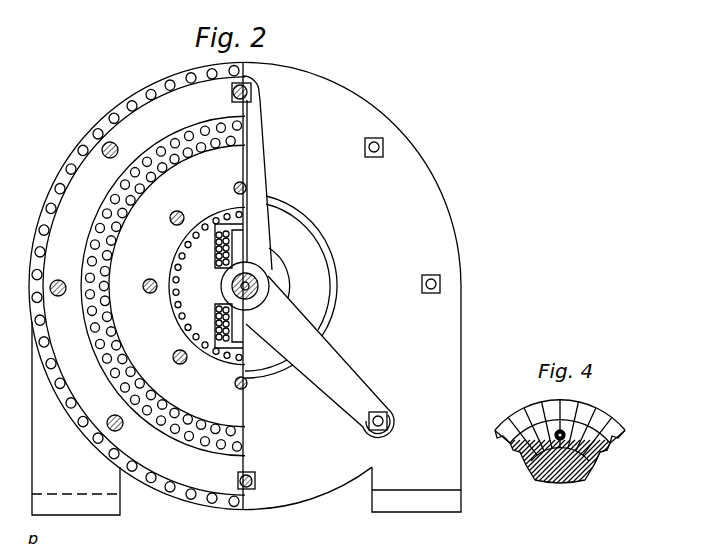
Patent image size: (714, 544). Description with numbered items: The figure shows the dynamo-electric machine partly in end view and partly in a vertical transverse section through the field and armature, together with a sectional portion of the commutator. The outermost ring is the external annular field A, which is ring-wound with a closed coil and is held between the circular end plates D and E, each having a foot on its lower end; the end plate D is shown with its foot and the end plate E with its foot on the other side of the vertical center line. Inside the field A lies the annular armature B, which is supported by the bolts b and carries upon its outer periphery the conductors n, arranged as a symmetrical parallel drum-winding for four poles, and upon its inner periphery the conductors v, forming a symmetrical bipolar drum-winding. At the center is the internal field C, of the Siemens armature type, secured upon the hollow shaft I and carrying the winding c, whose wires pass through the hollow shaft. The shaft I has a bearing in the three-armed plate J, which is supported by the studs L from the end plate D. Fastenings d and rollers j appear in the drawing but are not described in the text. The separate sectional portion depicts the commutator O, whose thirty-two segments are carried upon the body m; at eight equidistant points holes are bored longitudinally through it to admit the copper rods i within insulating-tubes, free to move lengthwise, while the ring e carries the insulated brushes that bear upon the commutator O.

In FIG. 2, the external annular field A is at (137, 285).
In FIG. 2, the annular armature B is at (163, 285).
In FIG. 2, the internal field C is at (221, 290).
In FIG. 2, the end plate D is at (353, 287).
In FIG. 2, the end plate E is at (76, 418).
In FIG. 2, the hollow shaft I is at (240, 286).
In FIG. 2, the three-armed plate J is at (318, 257).
In FIG. 2, the studs L is at (254, 95).
In FIG. 2, the bolts b is at (169, 289).
In FIG. 2, the winding c is at (223, 286).
In FIG. 2, the fastening bolt d is at (388, 149).
In FIG. 2, the ball j is at (194, 125).
In FIG. 2, the conductors n is at (203, 154).
In FIG. 2, the conductors v is at (207, 285).
In FIG. 4, the commutator O is at (560, 433).
In FIG. 4, the ring e is at (560, 435).
In FIG. 4, the body m is at (542, 465).
In FIG. 4, the copper rods i is at (617, 441).